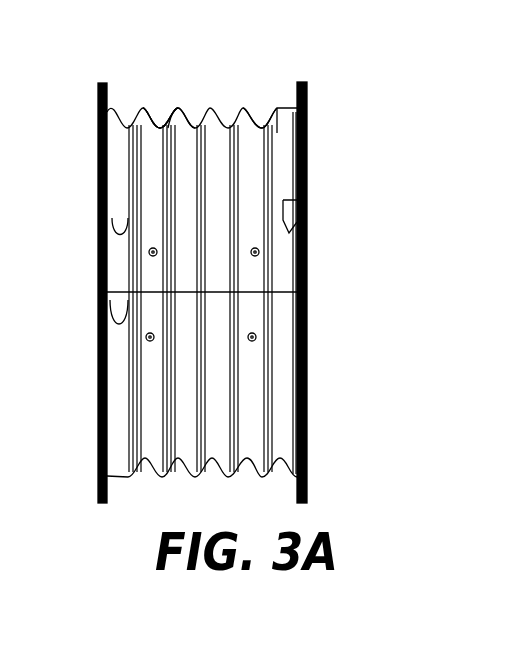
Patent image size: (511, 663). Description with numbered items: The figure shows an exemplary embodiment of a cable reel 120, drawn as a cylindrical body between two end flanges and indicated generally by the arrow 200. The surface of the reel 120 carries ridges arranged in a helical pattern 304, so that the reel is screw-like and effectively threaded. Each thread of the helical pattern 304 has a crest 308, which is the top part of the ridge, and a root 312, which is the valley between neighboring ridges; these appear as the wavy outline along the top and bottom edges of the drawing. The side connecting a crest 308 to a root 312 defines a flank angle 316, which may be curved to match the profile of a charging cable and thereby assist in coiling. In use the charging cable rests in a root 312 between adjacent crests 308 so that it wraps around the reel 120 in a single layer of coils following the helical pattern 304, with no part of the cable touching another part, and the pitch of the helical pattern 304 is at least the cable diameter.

The pulley assembly 200 is at (333, 262).
The cable reel 120 is at (307, 128).
The crest 308 is at (178, 108).
The helical pattern 304 is at (217, 90).
The flank angle 316 is at (258, 126).
The root 312 is at (165, 128).